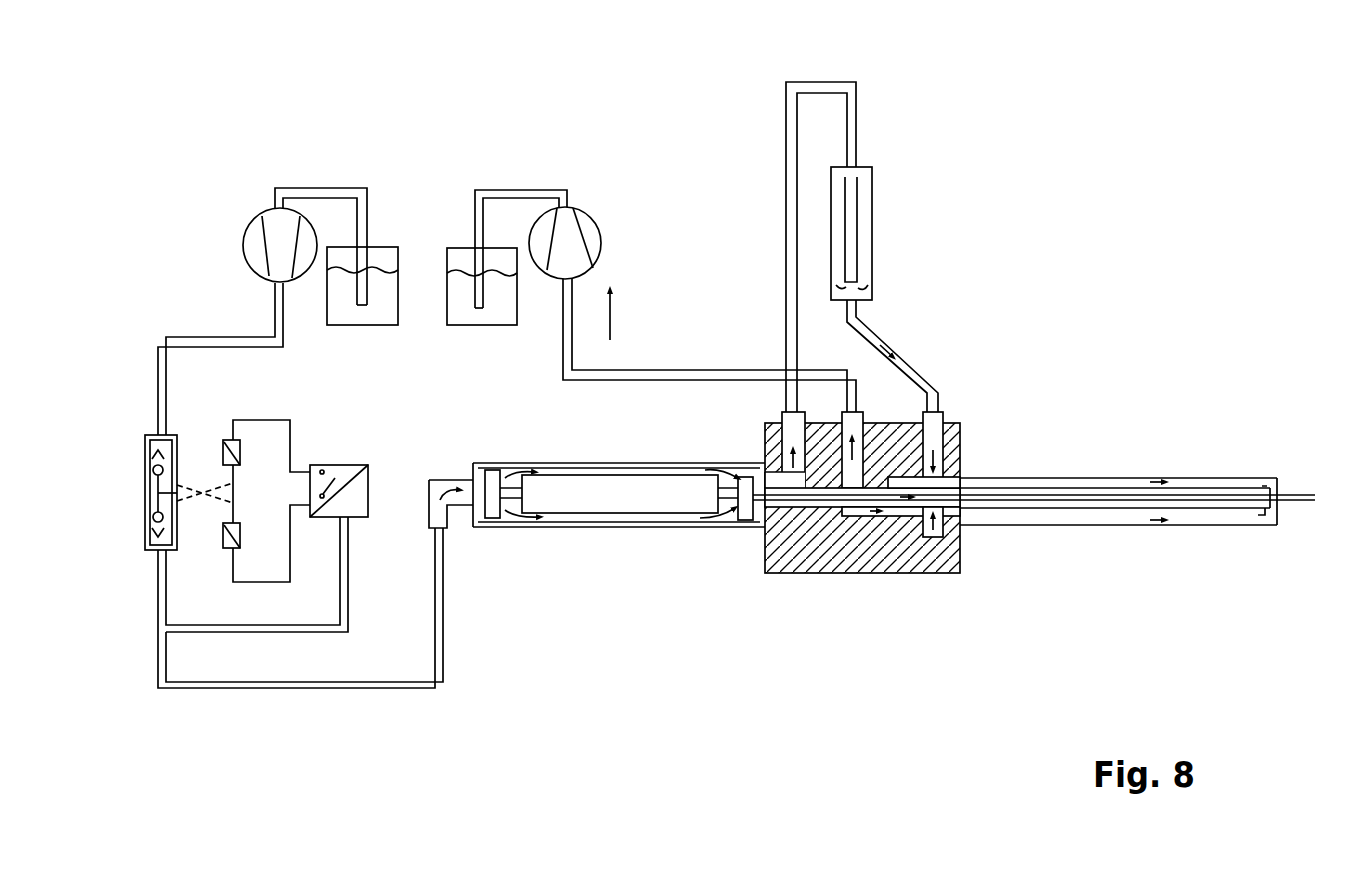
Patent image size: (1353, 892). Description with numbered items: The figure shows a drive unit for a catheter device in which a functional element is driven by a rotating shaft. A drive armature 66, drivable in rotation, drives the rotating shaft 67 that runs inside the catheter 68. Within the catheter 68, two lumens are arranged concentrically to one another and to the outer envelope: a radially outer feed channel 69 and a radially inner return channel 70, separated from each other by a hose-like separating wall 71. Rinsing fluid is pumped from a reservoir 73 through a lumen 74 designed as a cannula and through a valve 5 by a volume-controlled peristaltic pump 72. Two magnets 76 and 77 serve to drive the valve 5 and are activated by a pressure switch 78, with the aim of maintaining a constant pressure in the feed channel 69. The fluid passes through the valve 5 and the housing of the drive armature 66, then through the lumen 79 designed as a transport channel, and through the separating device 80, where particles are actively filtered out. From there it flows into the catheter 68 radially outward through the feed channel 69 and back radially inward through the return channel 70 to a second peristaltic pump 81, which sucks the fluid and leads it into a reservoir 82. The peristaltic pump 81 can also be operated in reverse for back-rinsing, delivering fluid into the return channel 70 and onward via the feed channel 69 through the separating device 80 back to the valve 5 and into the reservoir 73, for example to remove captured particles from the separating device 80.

The valve unit 5 is at (145, 518).
The drive armature 66 is at (578, 486).
The rotating shaft 67 is at (1300, 494).
The catheter 68 is at (1213, 525).
The feed channel 69 is at (935, 450).
The return channel 70 is at (893, 510).
The separating wall 71 is at (1247, 517).
The peristaltic pump 72 is at (264, 204).
The reservoir 73 is at (398, 266).
The lumen 74 is at (156, 378).
The magnet 76 is at (225, 440).
The magnet 77 is at (228, 550).
The pressure switch 78 is at (368, 473).
The lumen 79 is at (782, 150).
The separating device 80 is at (872, 215).
The peristaltic pump 81 is at (602, 232).
The reservoir 82 is at (445, 273).